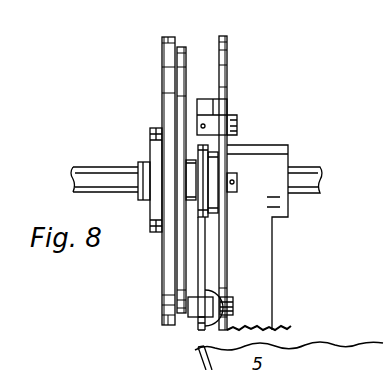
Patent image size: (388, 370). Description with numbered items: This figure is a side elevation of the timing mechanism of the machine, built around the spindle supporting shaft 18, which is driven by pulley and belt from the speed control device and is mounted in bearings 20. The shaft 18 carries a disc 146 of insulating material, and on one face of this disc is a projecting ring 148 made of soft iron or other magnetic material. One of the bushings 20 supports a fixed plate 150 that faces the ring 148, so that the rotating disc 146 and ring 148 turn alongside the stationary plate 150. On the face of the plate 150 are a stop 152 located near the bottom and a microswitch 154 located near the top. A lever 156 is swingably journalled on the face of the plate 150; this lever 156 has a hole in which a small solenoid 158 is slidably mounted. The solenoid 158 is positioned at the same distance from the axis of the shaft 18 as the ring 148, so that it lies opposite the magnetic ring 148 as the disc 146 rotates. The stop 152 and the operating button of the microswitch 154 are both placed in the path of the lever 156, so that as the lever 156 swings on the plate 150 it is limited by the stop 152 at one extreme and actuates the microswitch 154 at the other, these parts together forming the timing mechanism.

The spindle supporting shaft 18 is at (300, 177).
The bearings 20 is at (273, 203).
The disc 146 is at (163, 83).
The projecting ring 148 is at (183, 78).
The fixed plate 150 is at (228, 83).
The stop 152 is at (227, 320).
The microswitch 154 is at (226, 110).
The lever 156 is at (202, 265).
The solenoid 158 is at (193, 310).